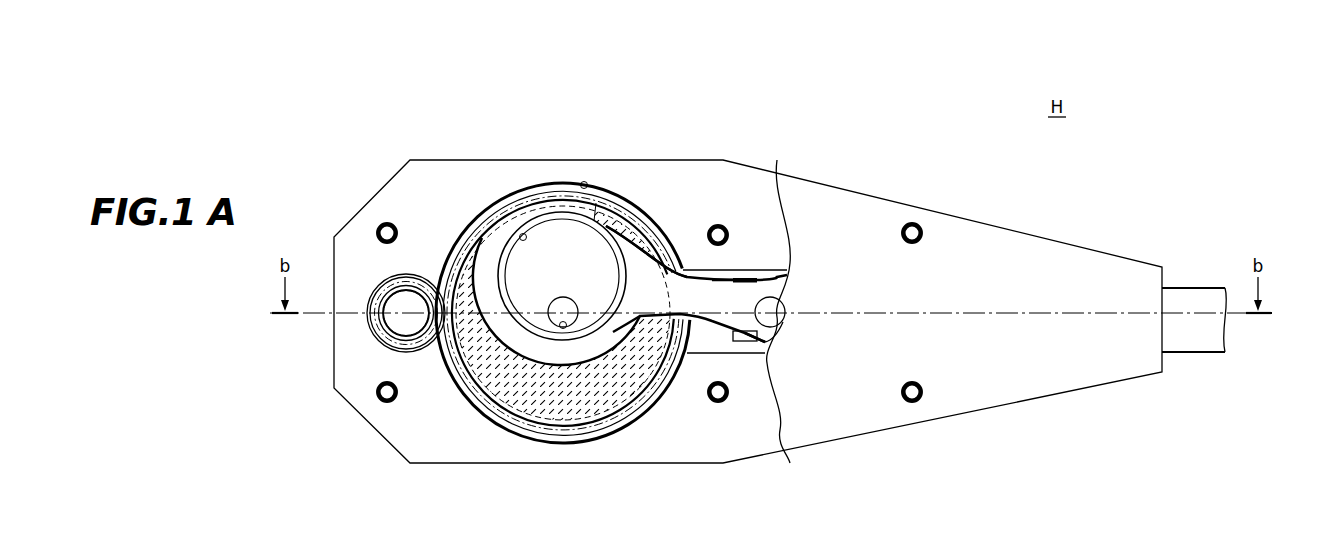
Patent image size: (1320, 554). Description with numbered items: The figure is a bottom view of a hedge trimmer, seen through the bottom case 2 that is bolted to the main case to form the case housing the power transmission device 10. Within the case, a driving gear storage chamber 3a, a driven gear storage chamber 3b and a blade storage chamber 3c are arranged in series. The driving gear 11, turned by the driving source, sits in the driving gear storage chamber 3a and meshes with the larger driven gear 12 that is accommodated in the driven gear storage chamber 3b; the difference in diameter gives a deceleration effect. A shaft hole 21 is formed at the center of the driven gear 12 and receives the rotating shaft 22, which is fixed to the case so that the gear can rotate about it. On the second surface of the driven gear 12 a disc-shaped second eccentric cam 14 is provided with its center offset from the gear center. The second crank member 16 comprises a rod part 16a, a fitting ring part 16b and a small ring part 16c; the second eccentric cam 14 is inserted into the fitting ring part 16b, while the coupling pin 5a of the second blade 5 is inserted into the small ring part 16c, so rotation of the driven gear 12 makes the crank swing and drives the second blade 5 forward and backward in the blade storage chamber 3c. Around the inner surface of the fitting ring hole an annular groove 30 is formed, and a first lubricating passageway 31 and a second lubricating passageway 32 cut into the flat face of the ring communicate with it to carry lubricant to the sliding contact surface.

The bottom case 2 is at (1053, 258).
The driving gear storage chamber 3a is at (385, 278).
The driven gear storage chamber 3b is at (584, 181).
The blade storage chamber 3c is at (786, 276).
The second blade 5 is at (1198, 297).
The coupling pin 5a is at (773, 303).
The power transmission device 10 is at (752, 234).
The driving gear 11 is at (403, 320).
The driven gear 12 is at (608, 403).
The second eccentric cam 14 is at (557, 240).
The second crank member 16 is at (706, 329).
The rod part 16a is at (712, 286).
The fitting ring part 16b is at (587, 213).
The small ring part 16c is at (767, 338).
The shaft hole 21 is at (562, 329).
The rotating shaft 22 is at (567, 300).
The annular groove 30 is at (521, 234).
The first lubricating passageway 31 is at (708, 291).
The second lubricating passageway 32 is at (627, 310).